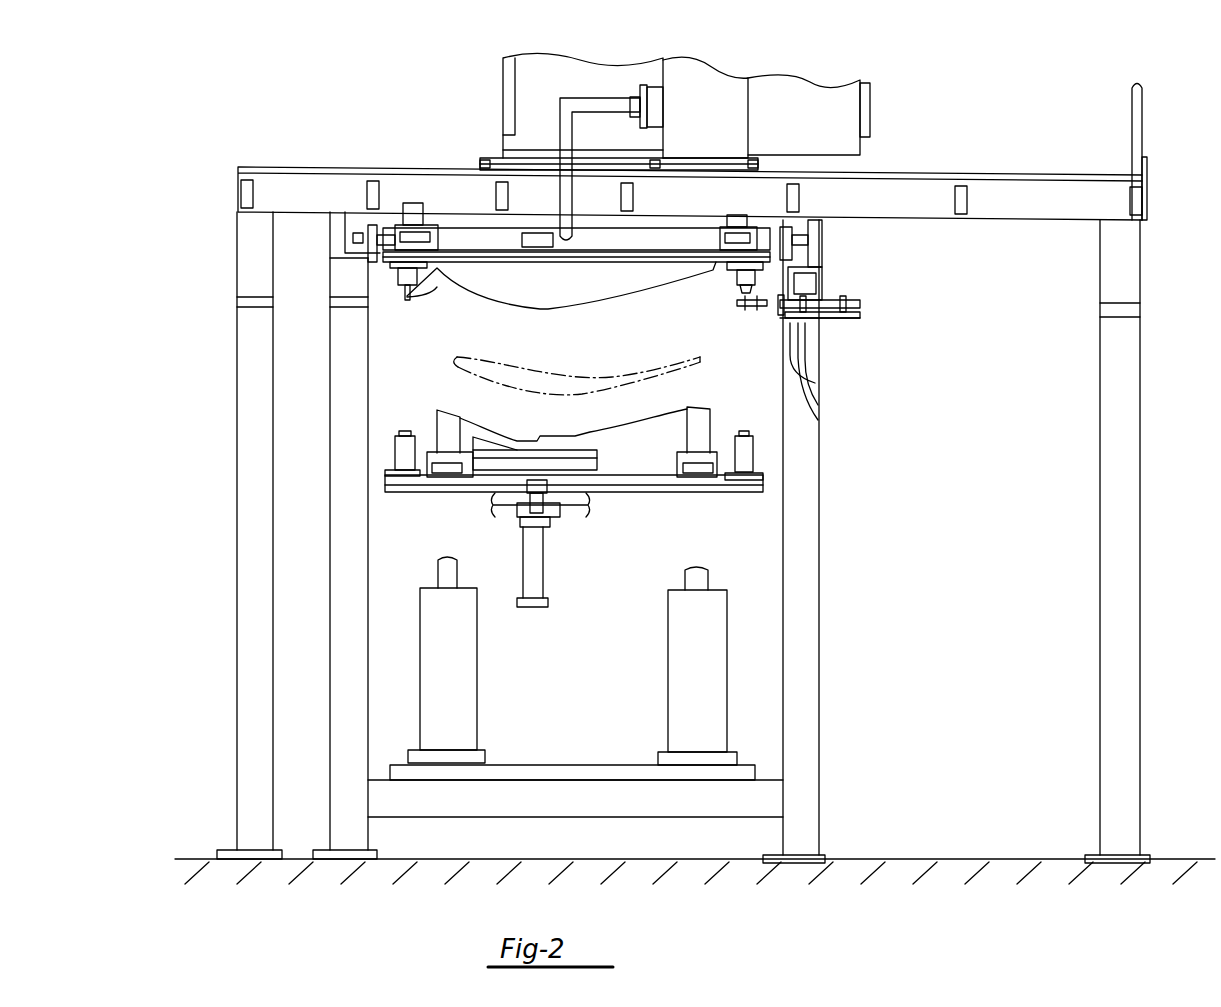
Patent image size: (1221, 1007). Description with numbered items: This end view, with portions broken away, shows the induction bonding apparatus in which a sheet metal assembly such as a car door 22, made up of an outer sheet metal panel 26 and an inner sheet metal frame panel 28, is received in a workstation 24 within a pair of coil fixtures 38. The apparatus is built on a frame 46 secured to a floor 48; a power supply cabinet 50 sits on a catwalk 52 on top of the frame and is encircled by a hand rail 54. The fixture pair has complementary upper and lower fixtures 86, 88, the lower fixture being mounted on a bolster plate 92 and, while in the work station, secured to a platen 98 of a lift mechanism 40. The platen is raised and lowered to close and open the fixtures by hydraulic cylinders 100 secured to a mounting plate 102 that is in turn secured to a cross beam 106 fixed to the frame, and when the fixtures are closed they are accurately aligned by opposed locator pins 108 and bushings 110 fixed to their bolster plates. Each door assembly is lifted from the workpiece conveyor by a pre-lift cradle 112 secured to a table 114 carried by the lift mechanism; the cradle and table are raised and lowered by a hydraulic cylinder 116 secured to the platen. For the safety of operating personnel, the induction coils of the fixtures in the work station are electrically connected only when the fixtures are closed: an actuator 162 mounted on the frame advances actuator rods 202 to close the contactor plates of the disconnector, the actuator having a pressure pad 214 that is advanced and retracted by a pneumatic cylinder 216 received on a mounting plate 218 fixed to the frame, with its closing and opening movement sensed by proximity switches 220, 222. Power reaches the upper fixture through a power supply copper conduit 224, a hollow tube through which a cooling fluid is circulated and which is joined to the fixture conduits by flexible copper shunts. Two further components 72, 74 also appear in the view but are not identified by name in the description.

The car door 22 is at (450, 357).
The workstation 24 is at (408, 310).
The outer sheet metal panel 26 is at (487, 383).
The inner sheet metal frame panel 28 is at (570, 373).
The coil fixtures 38 is at (720, 417).
The lift mechanism 40 is at (743, 495).
The frame 46 is at (237, 525).
The floor 48 is at (985, 873).
The power supply cabinet 50 is at (875, 108).
The catwalk 52 is at (1075, 150).
The hand rail 54 is at (1138, 130).
The carriage rail 72 is at (357, 226).
The carriage bracket 74 is at (345, 247).
The upper fixture 86 is at (563, 313).
The lower fixture 88 is at (655, 425).
The bolster plate 92 is at (717, 458).
The platen 98 is at (430, 492).
The hydraulic cylinders 100 is at (477, 713).
The mounting plate 102 is at (623, 763).
The cross beam 106 is at (627, 812).
The locator pins 108 is at (413, 292).
The bushings 110 is at (400, 440).
The pre-lift cradle 112 is at (507, 450).
The table 114 is at (598, 466).
The hydraulic cylinder 116 is at (543, 565).
The actuator 162 is at (858, 322).
The actuator rod 202 is at (750, 305).
The pressure pad 214 is at (780, 310).
The pneumatic cylinder 216 is at (832, 307).
The mounting plate 218 is at (847, 330).
The proximity switch 220 is at (818, 385).
The proximity switch 222 is at (818, 412).
The power supply copper conduit 224 is at (575, 102).